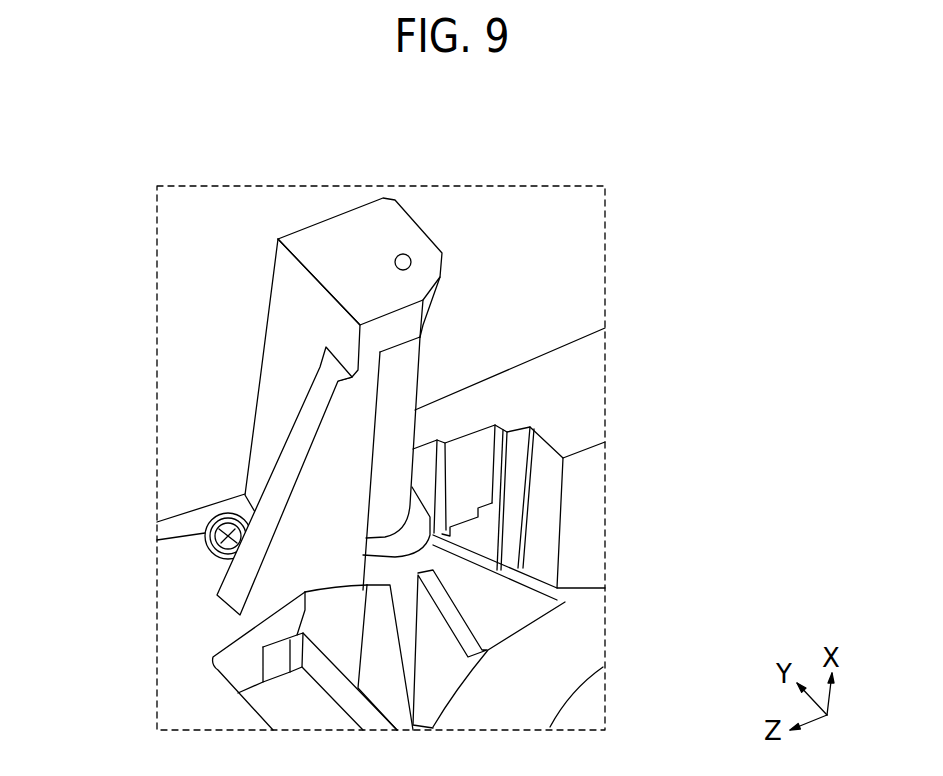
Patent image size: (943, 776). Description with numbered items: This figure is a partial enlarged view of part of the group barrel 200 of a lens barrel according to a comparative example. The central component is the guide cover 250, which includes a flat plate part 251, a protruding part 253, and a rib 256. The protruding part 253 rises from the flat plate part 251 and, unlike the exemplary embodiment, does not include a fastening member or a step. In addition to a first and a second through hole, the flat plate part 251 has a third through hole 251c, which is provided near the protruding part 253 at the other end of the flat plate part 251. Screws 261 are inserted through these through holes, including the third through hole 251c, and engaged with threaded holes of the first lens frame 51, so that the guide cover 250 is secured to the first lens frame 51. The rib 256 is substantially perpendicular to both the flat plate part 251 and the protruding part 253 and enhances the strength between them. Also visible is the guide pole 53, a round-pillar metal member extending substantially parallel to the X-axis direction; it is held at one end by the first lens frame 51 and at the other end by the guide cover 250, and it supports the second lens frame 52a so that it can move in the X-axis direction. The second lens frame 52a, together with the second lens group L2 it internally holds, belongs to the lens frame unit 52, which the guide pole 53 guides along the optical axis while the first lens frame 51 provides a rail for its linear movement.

The group barrel 200 is at (507, 283).
The first lens frame 51 is at (585, 364).
The lens frame unit 52 is at (676, 632).
The second lens frame 52a is at (590, 645).
The second lens group L2 is at (590, 688).
The guide pole 53 is at (397, 398).
The guide cover 250 is at (242, 455).
The flat plate part 251 is at (178, 656).
The third through hole 251c is at (212, 517).
The protruding part 253 is at (281, 318).
The rib 256 is at (290, 575).
The screw 261 is at (215, 535).